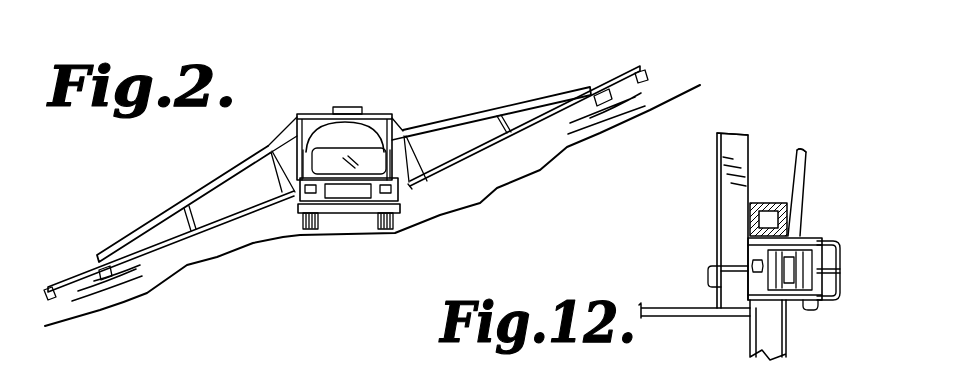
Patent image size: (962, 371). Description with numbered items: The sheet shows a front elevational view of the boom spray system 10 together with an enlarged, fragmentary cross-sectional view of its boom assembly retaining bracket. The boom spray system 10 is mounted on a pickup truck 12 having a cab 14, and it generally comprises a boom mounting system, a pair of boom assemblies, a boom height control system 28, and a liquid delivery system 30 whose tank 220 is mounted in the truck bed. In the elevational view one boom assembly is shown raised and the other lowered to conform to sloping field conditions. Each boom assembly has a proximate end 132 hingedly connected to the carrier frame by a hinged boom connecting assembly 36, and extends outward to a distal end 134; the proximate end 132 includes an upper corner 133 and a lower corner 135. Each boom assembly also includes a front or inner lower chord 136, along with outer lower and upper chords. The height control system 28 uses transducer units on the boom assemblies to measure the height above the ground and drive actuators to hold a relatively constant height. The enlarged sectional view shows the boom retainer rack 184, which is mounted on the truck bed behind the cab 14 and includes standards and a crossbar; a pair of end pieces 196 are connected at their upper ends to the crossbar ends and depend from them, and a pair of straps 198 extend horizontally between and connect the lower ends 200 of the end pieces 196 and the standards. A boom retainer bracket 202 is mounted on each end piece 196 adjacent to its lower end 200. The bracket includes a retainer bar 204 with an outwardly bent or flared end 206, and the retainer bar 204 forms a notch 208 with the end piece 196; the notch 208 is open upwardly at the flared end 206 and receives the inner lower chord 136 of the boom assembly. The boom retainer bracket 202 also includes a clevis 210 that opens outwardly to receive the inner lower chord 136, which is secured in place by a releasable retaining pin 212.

In FIG. 2, the boom spray system 10 is at (233, 148).
In FIG. 2, the pickup truck 12 is at (401, 206).
In FIG. 2, the cab 14 is at (357, 142).
In FIG. 2, the boom height control system 28 is at (609, 94).
In FIG. 2, the liquid delivery system 30 is at (375, 124).
In FIG. 2, the hinged boom connecting assembly 36 is at (412, 188).
In FIG. 2, the proximate end 132 is at (276, 152).
In FIG. 2, the upper corner 133 is at (405, 131).
In FIG. 2, the distal end 134 is at (648, 79).
In FIG. 2, the lower corner 135 is at (288, 205).
In FIG. 12, the front/inner lower chord 136 is at (762, 203).
In FIG. 12, the boom retainer rack 184 is at (752, 138).
In FIG. 12, the end piece 196 is at (717, 135).
In FIG. 12, the strap 198 is at (662, 307).
In FIG. 12, the lower end 200 is at (735, 318).
In FIG. 12, the boom retainer bracket 202 is at (817, 303).
In FIG. 12, the retainer bar 204 is at (804, 172).
In FIG. 12, the flared end 206 is at (803, 151).
In FIG. 12, the notch 208 is at (794, 226).
In FIG. 12, the clevis 210 is at (838, 243).
In FIG. 12, the retaining pin 212 is at (840, 271).
In FIG. 2, the tank 220 is at (333, 108).